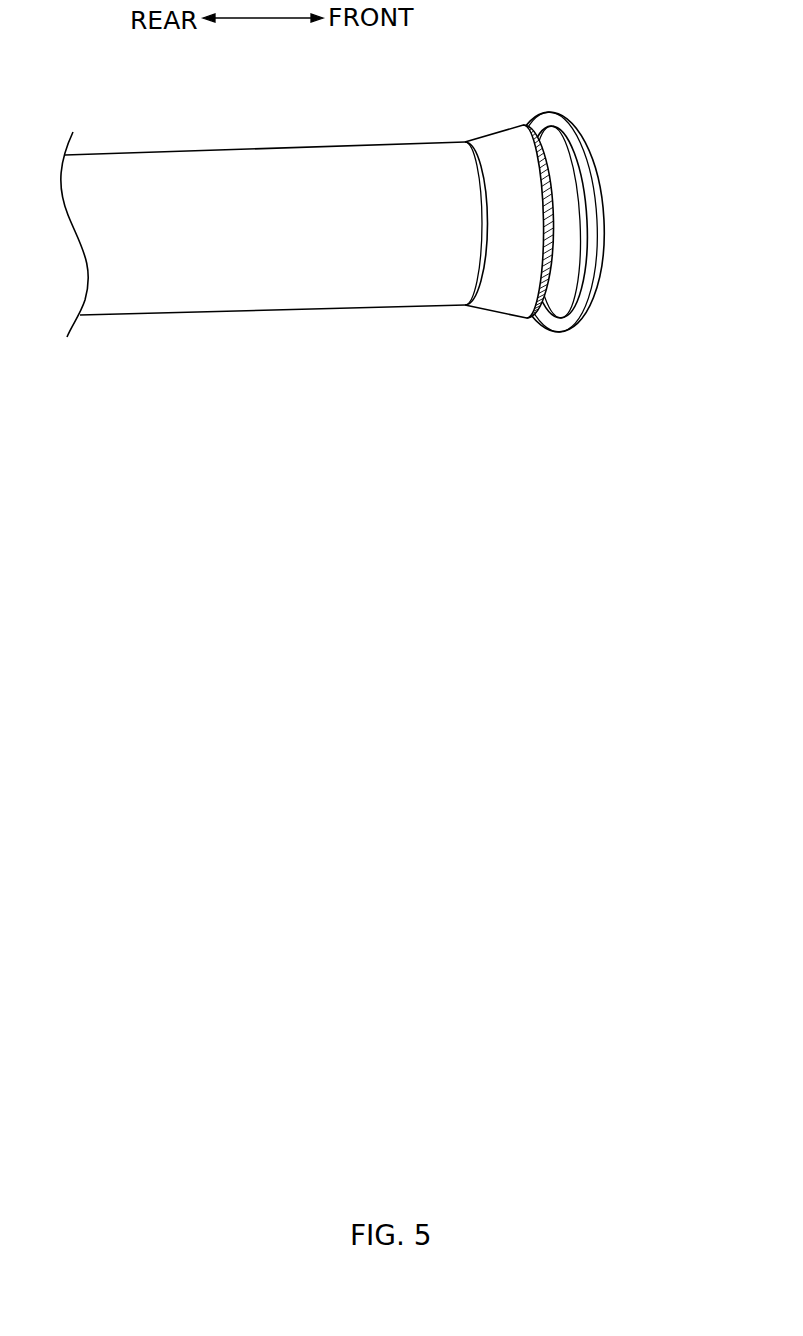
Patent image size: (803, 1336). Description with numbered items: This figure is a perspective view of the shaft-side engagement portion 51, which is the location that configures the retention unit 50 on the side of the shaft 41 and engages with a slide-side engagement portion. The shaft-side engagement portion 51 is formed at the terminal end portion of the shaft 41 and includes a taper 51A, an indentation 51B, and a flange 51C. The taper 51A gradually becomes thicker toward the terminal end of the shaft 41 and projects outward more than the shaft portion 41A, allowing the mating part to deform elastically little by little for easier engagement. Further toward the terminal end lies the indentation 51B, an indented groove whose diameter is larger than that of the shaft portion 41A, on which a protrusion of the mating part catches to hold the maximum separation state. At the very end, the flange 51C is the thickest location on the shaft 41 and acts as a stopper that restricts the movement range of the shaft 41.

The shaft 41 is at (263, 272).
The shaft portion 41A is at (113, 164).
The retention unit 50 is at (535, 256).
The shaft-side engagement portion 51 is at (535, 301).
The taper 51A is at (493, 287).
The indentation 51B is at (557, 300).
The flange 51C is at (565, 327).